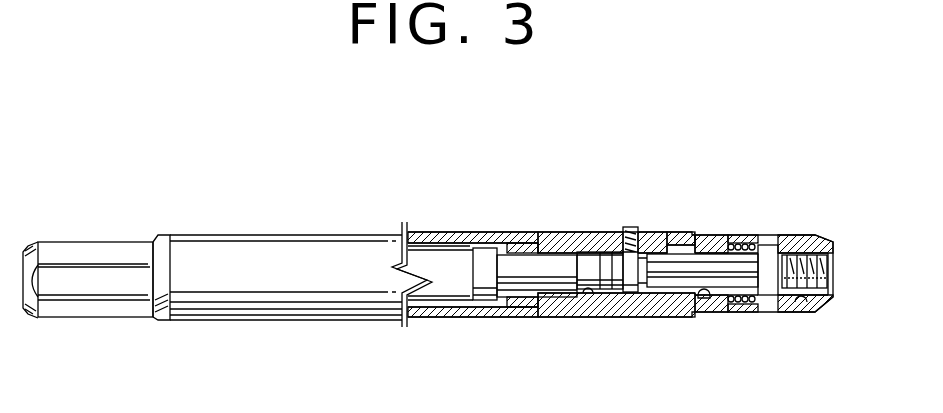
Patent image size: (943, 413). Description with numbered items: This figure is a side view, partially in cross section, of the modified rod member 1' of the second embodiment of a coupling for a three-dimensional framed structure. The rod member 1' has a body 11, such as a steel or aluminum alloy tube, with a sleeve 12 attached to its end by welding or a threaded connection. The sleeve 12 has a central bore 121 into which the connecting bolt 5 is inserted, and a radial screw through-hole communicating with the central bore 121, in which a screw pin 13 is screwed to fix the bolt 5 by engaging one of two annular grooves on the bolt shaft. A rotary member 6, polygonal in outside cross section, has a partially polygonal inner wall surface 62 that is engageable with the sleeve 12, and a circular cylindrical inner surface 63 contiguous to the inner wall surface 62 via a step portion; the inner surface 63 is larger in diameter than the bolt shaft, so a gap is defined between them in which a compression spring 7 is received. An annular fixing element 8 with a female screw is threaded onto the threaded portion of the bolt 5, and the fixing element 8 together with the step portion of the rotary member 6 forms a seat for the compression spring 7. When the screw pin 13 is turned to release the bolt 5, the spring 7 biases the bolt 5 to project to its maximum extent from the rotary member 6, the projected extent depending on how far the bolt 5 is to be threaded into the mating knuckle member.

The modified rod member 1' is at (255, 229).
The connecting bolt 5 is at (543, 272).
The rotary member 6 is at (763, 258).
The compression spring 7 is at (740, 312).
The annular fixing element 8 is at (820, 256).
The body 11 is at (450, 320).
The sleeve 12 is at (630, 320).
The central bore 121 is at (577, 320).
The screw pin 13 is at (631, 226).
The inner wall surface 62 is at (713, 312).
The circular cylindrical inner surface 63 is at (810, 312).